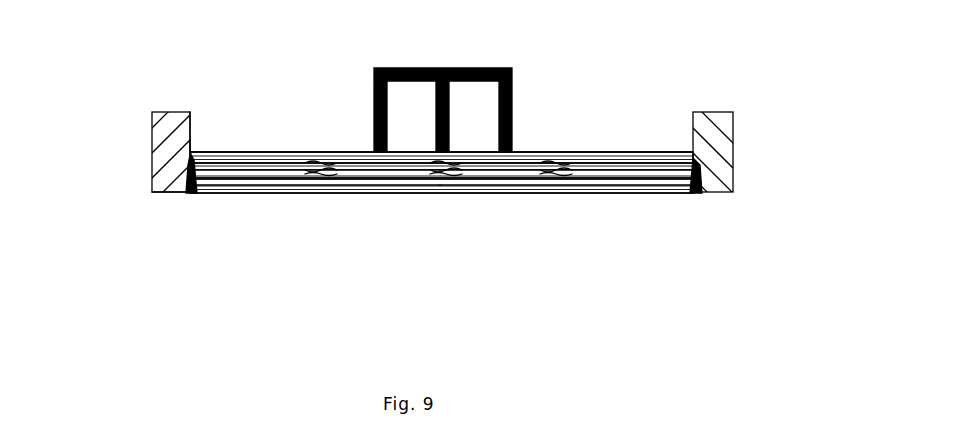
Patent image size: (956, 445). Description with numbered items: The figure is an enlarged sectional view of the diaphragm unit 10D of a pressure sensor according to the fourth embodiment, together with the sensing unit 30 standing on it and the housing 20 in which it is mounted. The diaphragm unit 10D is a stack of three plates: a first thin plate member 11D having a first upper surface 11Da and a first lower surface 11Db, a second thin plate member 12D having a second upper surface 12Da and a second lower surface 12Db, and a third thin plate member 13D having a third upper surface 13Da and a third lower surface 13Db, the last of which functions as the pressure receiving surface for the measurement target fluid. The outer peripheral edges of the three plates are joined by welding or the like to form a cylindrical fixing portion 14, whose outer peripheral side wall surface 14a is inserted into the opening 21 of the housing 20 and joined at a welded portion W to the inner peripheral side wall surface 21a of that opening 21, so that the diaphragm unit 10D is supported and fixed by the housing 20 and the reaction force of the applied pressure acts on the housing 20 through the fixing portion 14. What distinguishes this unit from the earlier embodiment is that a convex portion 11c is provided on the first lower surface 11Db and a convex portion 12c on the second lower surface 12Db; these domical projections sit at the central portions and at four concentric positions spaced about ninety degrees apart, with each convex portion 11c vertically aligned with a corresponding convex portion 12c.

The diaphragm unit 10D is at (445, 262).
The first thin plate member 11D is at (205, 162).
The second thin plate member 12D is at (212, 172).
The third thin plate member 13D is at (220, 183).
The first upper surface 11Da is at (615, 152).
The first lower surface 11Db is at (632, 152).
The second upper surface 12Da is at (540, 172).
The second lower surface 12Db is at (666, 193).
The third upper surface 13Da is at (632, 185).
The third lower surface 13Db is at (673, 187).
The convex portion 11c is at (333, 156).
The convex portion 12c is at (325, 172).
The fixing portion 14 is at (196, 193).
The outer peripheral side wall surface 14a is at (193, 152).
The housing 20 is at (173, 128).
The opening 21 is at (193, 140).
The inner peripheral side wall surface 21a is at (223, 112).
The sensing unit 30 is at (440, 68).
The welded portion W is at (182, 193).